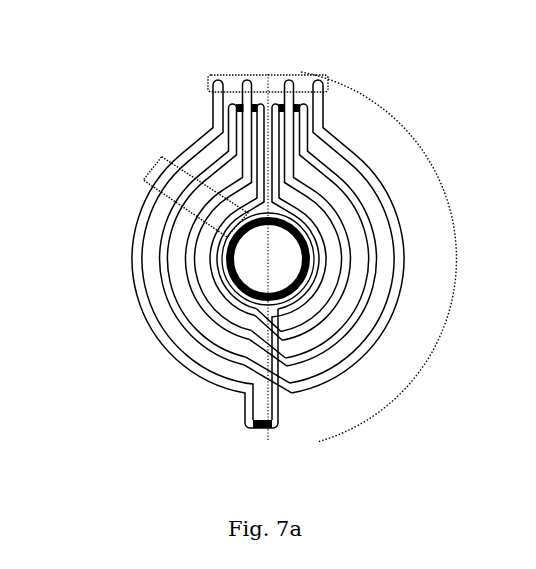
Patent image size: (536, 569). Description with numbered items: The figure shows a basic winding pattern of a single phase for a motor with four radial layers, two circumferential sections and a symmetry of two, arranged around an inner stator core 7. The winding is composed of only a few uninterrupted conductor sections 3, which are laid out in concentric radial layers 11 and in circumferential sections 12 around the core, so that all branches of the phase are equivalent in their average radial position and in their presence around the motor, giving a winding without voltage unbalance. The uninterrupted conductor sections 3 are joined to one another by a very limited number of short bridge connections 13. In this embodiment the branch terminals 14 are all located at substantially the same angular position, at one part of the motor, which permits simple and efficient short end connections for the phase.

The uninterrupted conductor section 3 is at (149, 324).
The inner stator core 7 is at (226, 262).
The radial layer 11 is at (152, 169).
The circumferential section 12 is at (437, 163).
The short bridge connection 13 is at (296, 103).
The branch terminal 14 is at (207, 83).